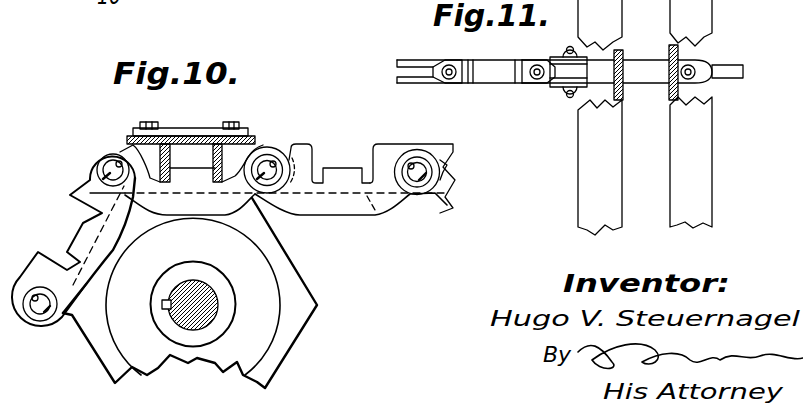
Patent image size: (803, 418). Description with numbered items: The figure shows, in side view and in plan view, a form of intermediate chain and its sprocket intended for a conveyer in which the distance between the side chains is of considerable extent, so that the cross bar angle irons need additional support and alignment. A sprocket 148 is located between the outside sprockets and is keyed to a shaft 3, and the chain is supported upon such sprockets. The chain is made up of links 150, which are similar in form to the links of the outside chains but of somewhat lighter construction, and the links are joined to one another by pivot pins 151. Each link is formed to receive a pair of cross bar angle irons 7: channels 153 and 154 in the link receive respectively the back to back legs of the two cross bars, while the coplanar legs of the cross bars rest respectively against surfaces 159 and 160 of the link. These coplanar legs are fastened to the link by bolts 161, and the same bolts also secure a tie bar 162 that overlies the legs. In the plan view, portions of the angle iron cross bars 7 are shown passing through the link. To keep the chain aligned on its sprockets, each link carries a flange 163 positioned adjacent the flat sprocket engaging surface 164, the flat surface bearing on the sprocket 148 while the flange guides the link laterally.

In FIG. 10, the shaft 3 is at (197, 300).
In FIG. 11, the cross bar angle iron 7 is at (660, 117).
In FIG. 10, the sprocket 148 is at (280, 343).
In FIG. 10, the link 150 is at (103, 152).
In FIG. 10, the pivot pin 151 is at (450, 168).
In FIG. 11, the pivot pin 151 is at (568, 96).
In FIG. 10, the channel 153 is at (314, 170).
In FIG. 11, the channel 153 is at (468, 64).
In FIG. 10, the channel 154 is at (363, 180).
In FIG. 11, the channel 154 is at (521, 52).
In FIG. 10, the surface 159 is at (273, 145).
In FIG. 11, the surface 159 is at (428, 83).
In FIG. 10, the surface 160 is at (400, 145).
In FIG. 11, the surface 160 is at (540, 80).
In FIG. 10, the bolt 161 is at (231, 122).
In FIG. 10, the tie bar 162 is at (128, 133).
In FIG. 10, the flange 163 is at (343, 212).
In FIG. 10, the sprocket engaging surface 164 is at (380, 214).